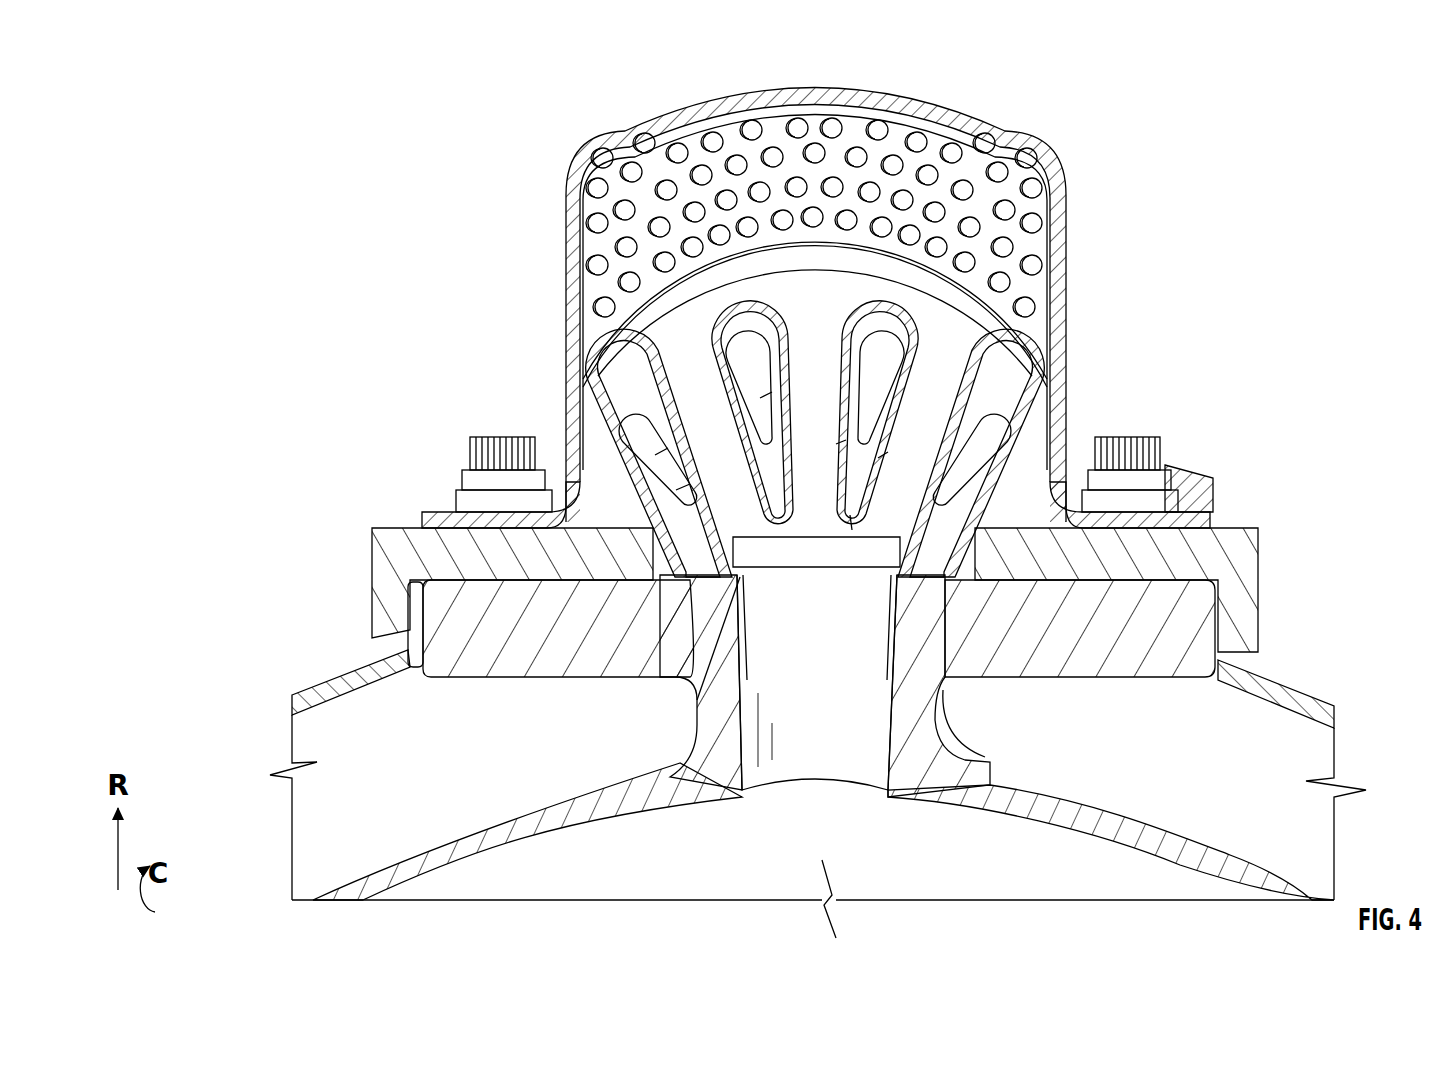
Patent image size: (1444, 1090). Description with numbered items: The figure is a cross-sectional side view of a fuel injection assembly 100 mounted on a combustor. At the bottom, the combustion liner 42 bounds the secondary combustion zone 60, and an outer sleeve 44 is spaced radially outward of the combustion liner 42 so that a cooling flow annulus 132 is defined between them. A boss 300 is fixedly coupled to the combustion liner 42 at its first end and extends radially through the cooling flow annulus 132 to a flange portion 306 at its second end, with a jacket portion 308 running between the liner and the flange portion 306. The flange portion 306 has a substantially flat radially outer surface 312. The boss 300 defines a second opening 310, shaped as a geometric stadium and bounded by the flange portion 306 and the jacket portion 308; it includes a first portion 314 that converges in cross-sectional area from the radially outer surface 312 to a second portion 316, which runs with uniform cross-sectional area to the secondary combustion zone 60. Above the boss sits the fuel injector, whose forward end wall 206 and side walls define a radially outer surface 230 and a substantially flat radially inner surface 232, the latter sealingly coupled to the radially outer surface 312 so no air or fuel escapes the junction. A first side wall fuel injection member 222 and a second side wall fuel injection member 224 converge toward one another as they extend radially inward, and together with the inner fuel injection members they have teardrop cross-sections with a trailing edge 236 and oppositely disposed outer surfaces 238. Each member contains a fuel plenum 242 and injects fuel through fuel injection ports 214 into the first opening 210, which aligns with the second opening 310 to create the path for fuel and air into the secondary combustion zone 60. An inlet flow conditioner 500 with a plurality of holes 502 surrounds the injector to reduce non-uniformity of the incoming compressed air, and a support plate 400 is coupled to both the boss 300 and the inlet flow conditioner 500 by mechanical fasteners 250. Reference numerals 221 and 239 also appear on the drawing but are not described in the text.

The fuel injection assembly 100 is at (468, 100).
The combustion liner 42 is at (1135, 832).
The outer sleeve 44 is at (1290, 668).
The secondary combustion zone 60 is at (868, 863).
The cooling flow annulus 132 is at (312, 797).
The forward end wall 206 is at (693, 300).
The first opening 210 is at (683, 413).
The fuel injection ports 214 is at (672, 455).
The first bundled tube fuel nozzle 221 is at (745, 318).
The first side wall fuel injection member 222 is at (600, 360).
The second side wall fuel injection member 224 is at (895, 318).
The radially outer surface 230 is at (805, 245).
The radially inner surface 232 is at (734, 553).
The trailing edge 236 is at (850, 515).
The outer surfaces 238 is at (682, 492).
The cap 239 is at (905, 305).
The fuel plenum 242 is at (635, 435).
The mechanical fastener 250 is at (495, 452).
The boss 300 is at (482, 642).
The flange portion 306 is at (577, 660).
The jacket portion 308 is at (945, 738).
The second opening 310 is at (887, 680).
The radially outer surface 312 is at (665, 680).
The first portion 314 is at (742, 625).
The second portion 316 is at (742, 750).
The support plate 400 is at (390, 565).
The inlet flow conditioner 500 is at (876, 102).
The holes 502 is at (637, 133).